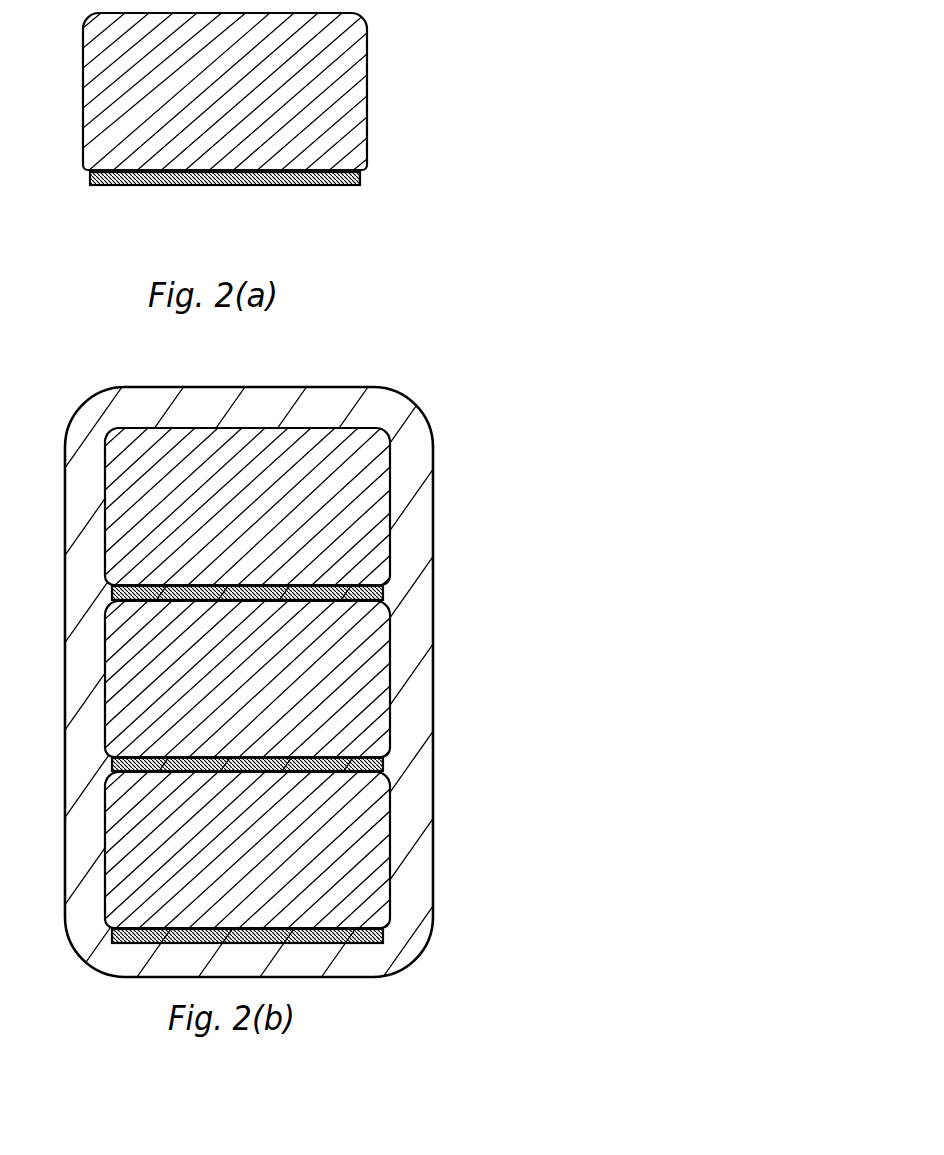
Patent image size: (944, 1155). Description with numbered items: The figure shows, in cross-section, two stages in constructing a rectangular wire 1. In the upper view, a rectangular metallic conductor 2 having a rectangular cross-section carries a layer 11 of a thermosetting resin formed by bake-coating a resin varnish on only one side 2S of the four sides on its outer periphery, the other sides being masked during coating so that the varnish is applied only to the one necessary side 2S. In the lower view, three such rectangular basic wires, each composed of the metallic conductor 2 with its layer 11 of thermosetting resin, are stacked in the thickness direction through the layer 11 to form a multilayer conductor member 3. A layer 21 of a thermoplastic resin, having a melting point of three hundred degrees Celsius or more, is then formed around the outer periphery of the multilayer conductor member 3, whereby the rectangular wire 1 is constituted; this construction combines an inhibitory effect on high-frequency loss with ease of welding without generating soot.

In FIG. 2B, the rectangular wire 1 is at (316, 652).
In FIG. 2A, the metallic conductor 2 is at (323, 102).
In FIG. 2B, the metallic conductor 2 is at (358, 517).
In FIG. 2A, the one side 2S is at (185, 187).
In FIG. 2B, the multilayer conductor member 3 is at (361, 690).
In FIG. 2A, the layer of thermosetting resin 11 is at (288, 185).
In FIG. 2B, the layer of thermosetting resin 11 is at (378, 592).
In FIG. 2B, the layer of thermoplastic resin 21 is at (146, 409).